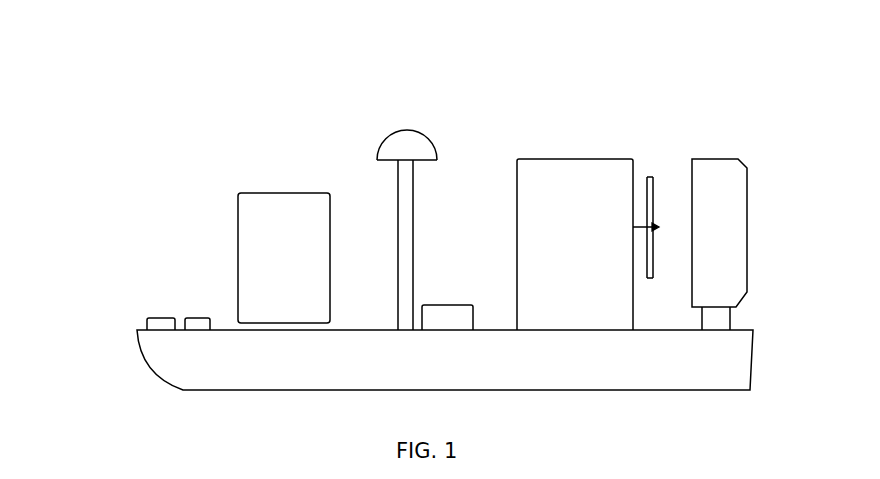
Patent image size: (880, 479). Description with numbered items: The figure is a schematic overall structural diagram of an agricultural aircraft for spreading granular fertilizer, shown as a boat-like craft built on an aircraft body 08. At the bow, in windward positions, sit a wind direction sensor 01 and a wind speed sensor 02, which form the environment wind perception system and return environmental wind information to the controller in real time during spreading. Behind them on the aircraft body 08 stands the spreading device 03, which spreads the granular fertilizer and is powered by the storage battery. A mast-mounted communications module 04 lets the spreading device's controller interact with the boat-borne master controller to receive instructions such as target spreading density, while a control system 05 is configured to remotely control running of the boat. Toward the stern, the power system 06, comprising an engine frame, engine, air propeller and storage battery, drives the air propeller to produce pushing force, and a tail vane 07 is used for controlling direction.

The wind direction sensor 01 is at (163, 316).
The wind speed sensor 02 is at (198, 316).
The spreading device 03 is at (285, 193).
The communications module 04 is at (407, 132).
The control system 05 is at (460, 305).
The power system 06 is at (570, 159).
The tail vane 07 is at (718, 159).
The aircraft body 08 is at (752, 345).